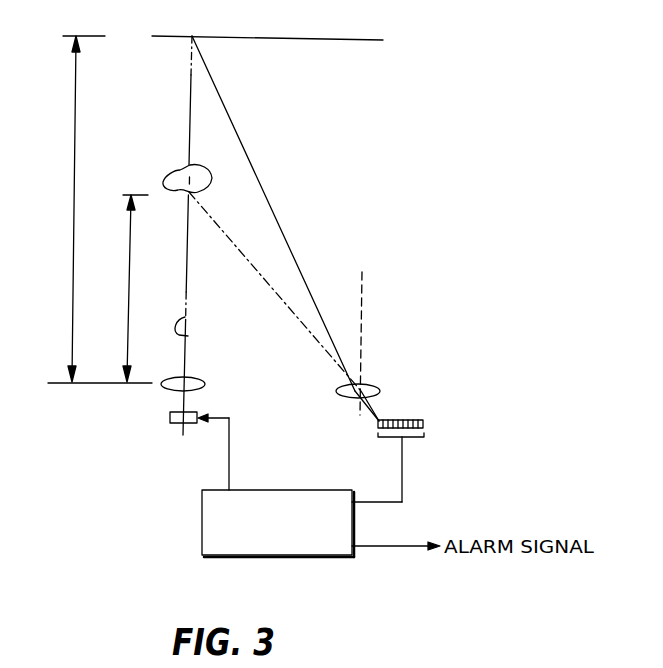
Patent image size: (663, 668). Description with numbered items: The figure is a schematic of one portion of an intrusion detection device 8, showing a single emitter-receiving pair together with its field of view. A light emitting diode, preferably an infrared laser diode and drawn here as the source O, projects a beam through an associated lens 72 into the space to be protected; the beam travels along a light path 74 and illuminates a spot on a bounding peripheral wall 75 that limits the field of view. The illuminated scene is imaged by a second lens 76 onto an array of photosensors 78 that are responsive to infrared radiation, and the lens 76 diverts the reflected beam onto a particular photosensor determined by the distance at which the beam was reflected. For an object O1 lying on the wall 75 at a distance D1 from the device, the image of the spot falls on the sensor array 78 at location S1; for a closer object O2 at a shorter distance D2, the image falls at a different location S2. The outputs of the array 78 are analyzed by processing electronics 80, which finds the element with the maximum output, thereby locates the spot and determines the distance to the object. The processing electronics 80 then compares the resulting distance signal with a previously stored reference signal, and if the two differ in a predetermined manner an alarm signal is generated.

The intrusion detection device 8 is at (428, 200).
The lens 72 is at (196, 380).
The light path 74 is at (190, 327).
The bounding peripheral wall 75 is at (333, 42).
The second lens 76 is at (371, 384).
The array of photosensors 78 is at (442, 428).
The processing electronics 80 is at (265, 496).
The light source/detector O is at (170, 418).
The object at distance D1 O1 is at (273, 213).
The object at distance D2 O2 is at (262, 278).
The sensor array location for object O1 S1 is at (380, 428).
The sensor array location for object O2 S2 is at (381, 419).
The distance to object O1 D1 is at (84, 209).
The distance to object O2 D2 is at (133, 288).